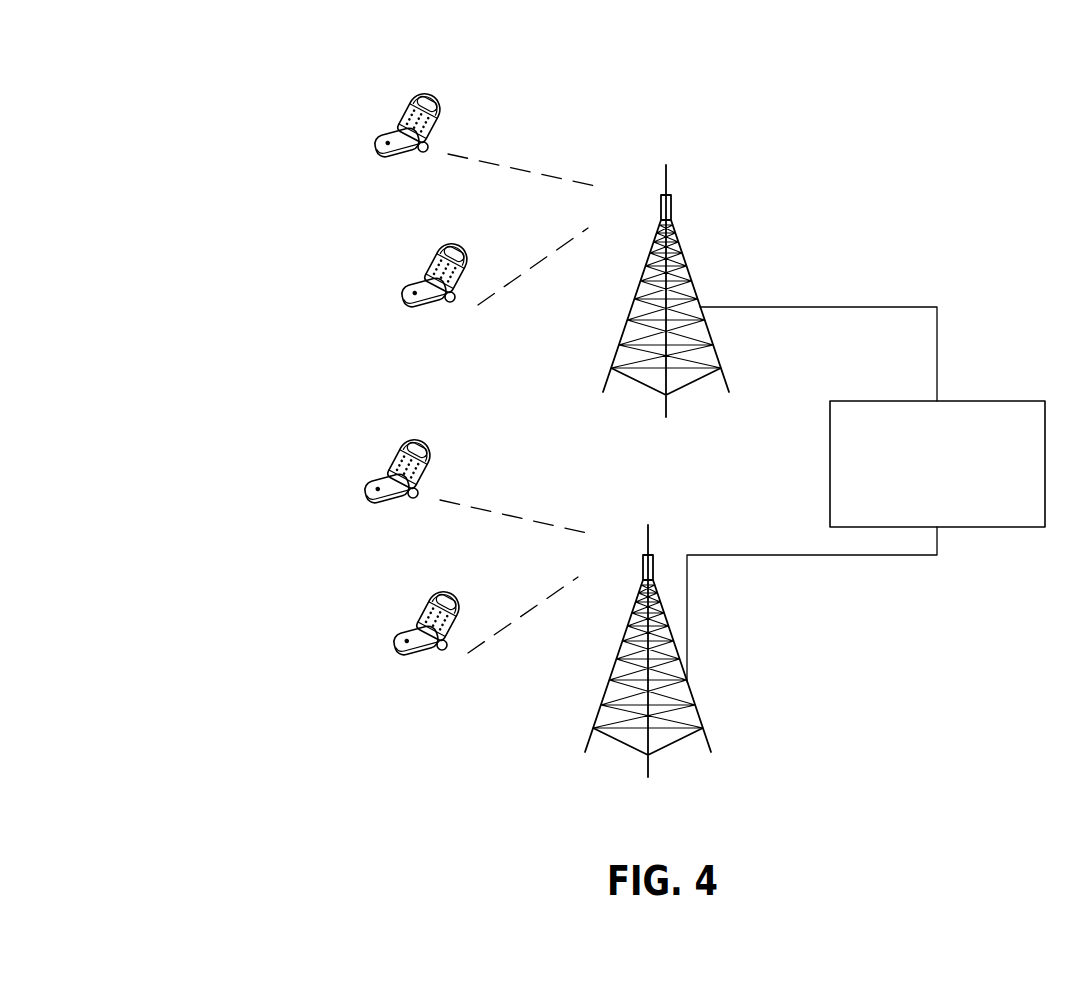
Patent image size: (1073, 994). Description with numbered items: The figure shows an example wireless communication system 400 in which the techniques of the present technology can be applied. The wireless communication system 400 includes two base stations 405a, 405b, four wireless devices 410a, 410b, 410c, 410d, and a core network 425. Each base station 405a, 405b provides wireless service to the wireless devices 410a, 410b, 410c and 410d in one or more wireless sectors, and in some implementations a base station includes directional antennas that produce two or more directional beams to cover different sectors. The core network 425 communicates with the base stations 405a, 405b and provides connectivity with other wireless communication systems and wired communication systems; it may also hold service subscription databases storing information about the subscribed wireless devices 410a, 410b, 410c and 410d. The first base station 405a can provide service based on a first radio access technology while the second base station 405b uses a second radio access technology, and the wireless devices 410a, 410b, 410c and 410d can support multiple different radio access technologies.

The wireless communication system 400 is at (185, 33).
The wireless device 410a is at (410, 105).
The wireless device 410b is at (438, 255).
The wireless device 410c is at (400, 452).
The wireless device 410d is at (428, 602).
The first base station 405a is at (683, 247).
The second base station 405b is at (655, 563).
The core network 425 is at (846, 401).